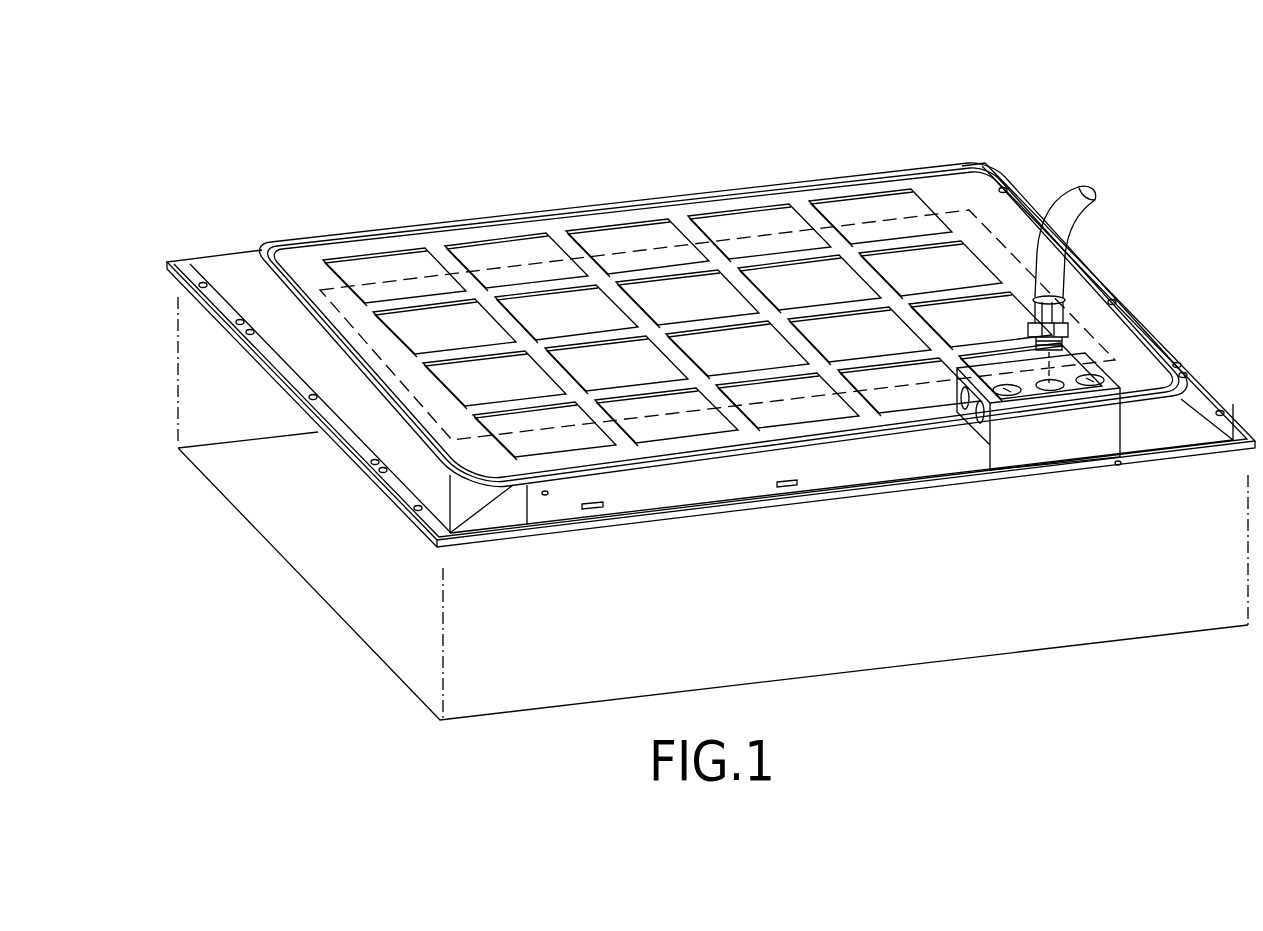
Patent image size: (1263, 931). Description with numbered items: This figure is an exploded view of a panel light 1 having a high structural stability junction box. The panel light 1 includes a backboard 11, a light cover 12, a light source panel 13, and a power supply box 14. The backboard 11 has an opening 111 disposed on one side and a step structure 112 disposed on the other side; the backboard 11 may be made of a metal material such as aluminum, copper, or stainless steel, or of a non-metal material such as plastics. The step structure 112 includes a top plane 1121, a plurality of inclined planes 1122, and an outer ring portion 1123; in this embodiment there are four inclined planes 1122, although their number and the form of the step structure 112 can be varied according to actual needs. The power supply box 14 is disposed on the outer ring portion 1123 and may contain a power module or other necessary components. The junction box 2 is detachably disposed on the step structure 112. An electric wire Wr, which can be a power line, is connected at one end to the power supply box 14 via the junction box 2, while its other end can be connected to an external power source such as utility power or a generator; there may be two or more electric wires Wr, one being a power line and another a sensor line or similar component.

The panel light 1 is at (681, 324).
The backboard 11 is at (711, 344).
The opening 111 is at (855, 506).
The step structure 112 is at (688, 308).
The top plane 1121 is at (712, 300).
The inclined planes 1122 is at (240, 287).
The outer ring portion 1123 is at (218, 297).
The light cover 12 is at (340, 565).
The light source panel 13 is at (862, 230).
The power supply box 14 is at (650, 500).
The junction box 2 is at (1037, 437).
The electric wire Wr is at (1053, 233).